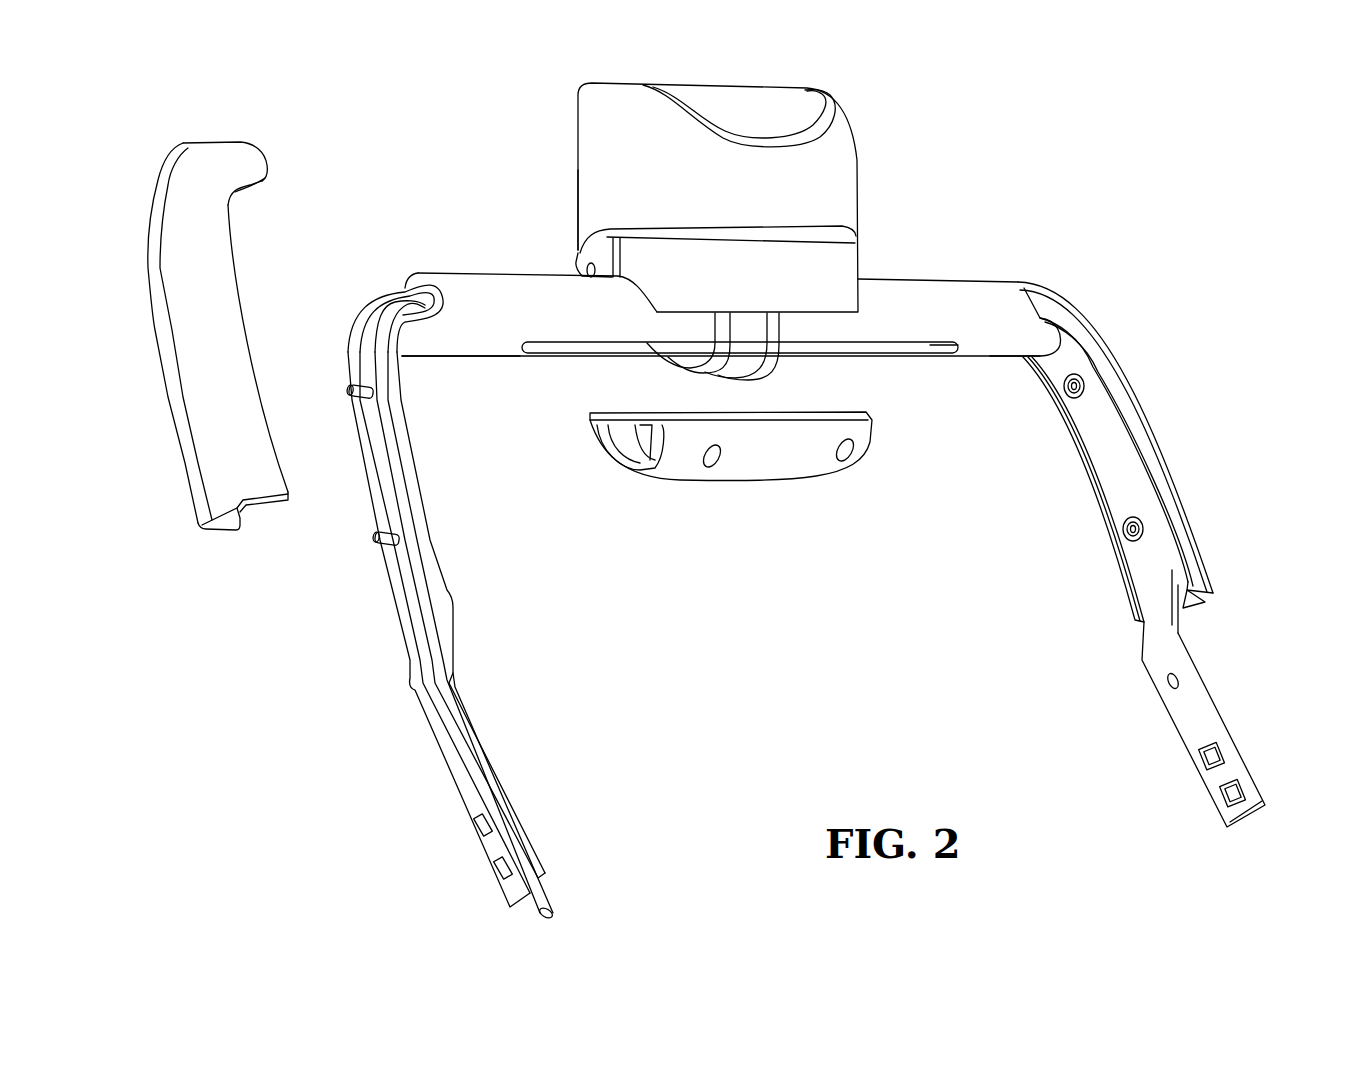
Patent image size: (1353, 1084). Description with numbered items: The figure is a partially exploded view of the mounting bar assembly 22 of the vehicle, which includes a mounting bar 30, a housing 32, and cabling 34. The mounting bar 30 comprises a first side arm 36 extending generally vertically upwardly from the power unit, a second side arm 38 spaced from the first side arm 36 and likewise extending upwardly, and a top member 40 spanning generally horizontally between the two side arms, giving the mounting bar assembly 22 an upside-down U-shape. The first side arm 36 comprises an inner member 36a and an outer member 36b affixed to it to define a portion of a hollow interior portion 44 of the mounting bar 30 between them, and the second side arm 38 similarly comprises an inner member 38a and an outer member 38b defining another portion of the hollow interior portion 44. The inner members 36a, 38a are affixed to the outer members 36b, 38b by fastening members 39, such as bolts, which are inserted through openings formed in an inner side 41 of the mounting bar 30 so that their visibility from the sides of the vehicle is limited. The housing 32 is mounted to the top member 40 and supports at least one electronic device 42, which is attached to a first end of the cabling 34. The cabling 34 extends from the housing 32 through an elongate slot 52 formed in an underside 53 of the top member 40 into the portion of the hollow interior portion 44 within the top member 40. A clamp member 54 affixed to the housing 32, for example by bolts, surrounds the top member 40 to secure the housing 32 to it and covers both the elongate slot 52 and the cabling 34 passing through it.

The mounting bar assembly 22 is at (992, 257).
The mounting bar 30 is at (487, 366).
The housing 32 is at (876, 149).
The cabling 34 is at (405, 625).
The first side arm 36 is at (1228, 480).
The inner member 36a is at (1105, 478).
The outer member 36b is at (1200, 552).
The second side arm 38 is at (245, 588).
The inner member 38a is at (425, 483).
The outer member 38b is at (218, 446).
The fastening members 39 is at (1070, 392).
The top member 40 is at (520, 290).
The inner side 41 is at (795, 626).
The electronic device 42 is at (612, 152).
The hollow interior portion 44 is at (425, 290).
The elongate slot 52 is at (940, 350).
The underside 53 is at (1008, 362).
The clamp member 54 is at (752, 462).